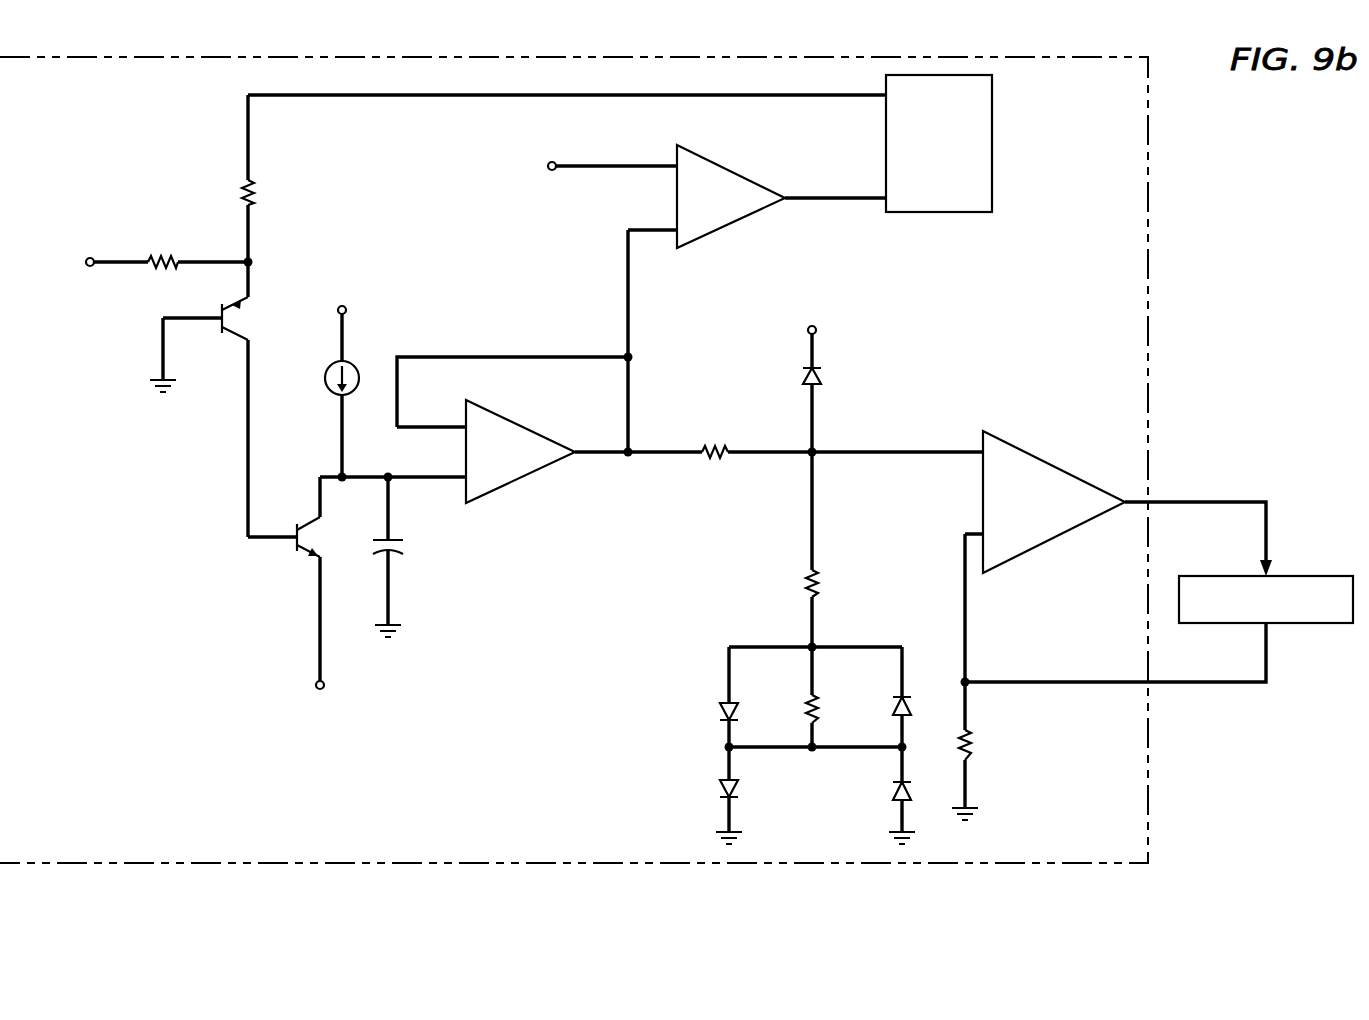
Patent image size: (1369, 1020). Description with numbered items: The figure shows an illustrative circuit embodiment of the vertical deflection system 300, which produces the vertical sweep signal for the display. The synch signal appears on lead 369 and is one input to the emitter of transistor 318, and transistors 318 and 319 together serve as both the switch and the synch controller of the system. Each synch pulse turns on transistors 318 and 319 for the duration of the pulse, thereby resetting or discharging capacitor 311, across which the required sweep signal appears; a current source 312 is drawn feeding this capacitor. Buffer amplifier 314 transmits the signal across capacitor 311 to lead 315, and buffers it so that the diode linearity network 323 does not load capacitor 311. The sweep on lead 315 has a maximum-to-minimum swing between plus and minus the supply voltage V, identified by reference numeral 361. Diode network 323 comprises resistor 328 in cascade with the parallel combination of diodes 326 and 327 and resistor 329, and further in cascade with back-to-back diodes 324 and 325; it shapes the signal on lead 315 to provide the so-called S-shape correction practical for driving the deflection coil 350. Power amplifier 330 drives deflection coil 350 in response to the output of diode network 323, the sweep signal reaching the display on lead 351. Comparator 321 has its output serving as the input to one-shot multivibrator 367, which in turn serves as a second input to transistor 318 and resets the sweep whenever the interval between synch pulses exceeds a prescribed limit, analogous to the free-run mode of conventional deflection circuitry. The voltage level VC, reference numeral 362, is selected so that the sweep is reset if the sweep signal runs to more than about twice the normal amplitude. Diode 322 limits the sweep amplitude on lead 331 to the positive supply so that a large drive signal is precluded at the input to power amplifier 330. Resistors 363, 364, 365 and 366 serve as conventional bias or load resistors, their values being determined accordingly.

The vertical deflection system 300 is at (189, 812).
The capacitor 311 is at (404, 552).
The current source 312 is at (360, 364).
The buffer amplifier 314 is at (532, 472).
The lead 315 is at (658, 458).
The transistor 318 is at (238, 325).
The transistor 319 is at (318, 534).
The comparator 321 is at (730, 164).
The diode 322 is at (824, 376).
The diode linearity network 323 is at (712, 593).
The diode 324 is at (722, 786).
The diode 325 is at (894, 790).
The diode 326 is at (722, 710).
The diode 327 is at (914, 708).
The resistor 328 is at (822, 582).
The resistor 329 is at (820, 704).
The power amplifier 330 is at (1010, 440).
The lead 331 is at (880, 450).
The deflection coil 350 is at (1300, 625).
The lead 351 is at (1196, 500).
The voltage V 361 is at (826, 324).
The voltage level VC 362 is at (538, 155).
The resistor 363 is at (248, 184).
The resistor 364 is at (168, 255).
The resistor 365 is at (716, 446).
The resistor 366 is at (978, 742).
The one-shot multivibrator 367 is at (992, 142).
The lead 369 is at (88, 258).